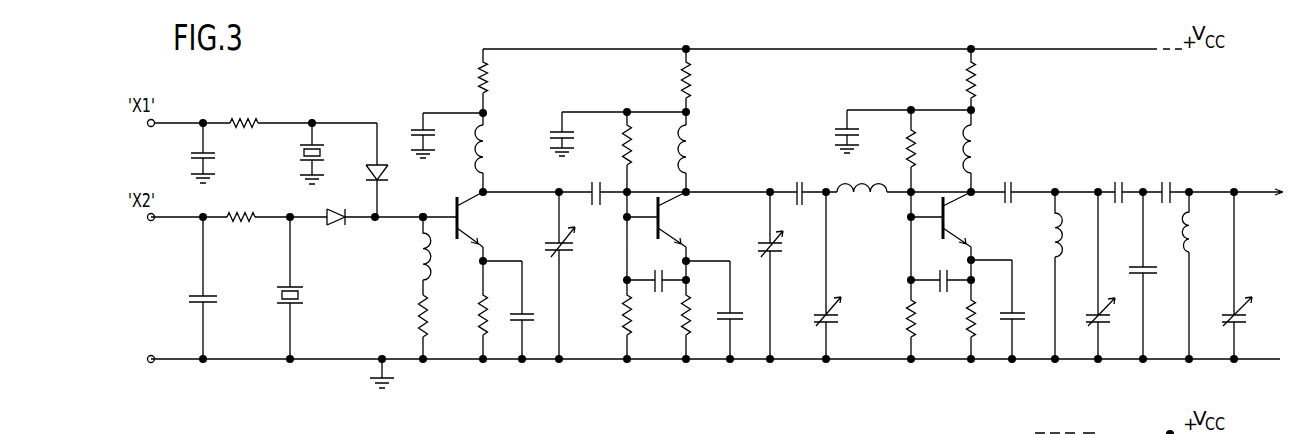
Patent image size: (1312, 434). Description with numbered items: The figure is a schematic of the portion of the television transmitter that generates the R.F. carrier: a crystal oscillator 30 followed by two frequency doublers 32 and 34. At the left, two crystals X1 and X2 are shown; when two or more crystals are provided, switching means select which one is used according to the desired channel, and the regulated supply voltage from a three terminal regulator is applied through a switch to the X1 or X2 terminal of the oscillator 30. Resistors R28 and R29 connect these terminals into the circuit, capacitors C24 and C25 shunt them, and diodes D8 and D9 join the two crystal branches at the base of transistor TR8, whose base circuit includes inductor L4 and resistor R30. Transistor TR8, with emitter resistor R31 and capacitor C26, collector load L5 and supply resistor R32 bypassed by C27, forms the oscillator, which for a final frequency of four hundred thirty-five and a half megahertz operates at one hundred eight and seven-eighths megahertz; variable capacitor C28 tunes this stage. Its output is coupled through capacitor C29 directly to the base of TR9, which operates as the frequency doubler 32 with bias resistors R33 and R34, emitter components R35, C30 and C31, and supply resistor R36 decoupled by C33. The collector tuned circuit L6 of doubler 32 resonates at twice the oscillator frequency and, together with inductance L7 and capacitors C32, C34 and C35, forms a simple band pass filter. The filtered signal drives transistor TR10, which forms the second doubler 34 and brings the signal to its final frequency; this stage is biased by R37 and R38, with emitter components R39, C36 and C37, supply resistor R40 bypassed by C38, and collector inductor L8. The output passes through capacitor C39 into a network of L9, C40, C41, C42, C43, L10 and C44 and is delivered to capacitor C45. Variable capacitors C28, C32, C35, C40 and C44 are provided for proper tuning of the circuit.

The crystal oscillator 30 is at (365, 312).
The frequency doubler 32 is at (800, 92).
The frequency doubler 34 is at (1072, 95).
The crystal X1 is at (298, 151).
The crystal X2 is at (302, 288).
The resistor R28 is at (241, 205).
The resistor R29 is at (266, 111).
The resistor R30 is at (407, 329).
The resistor R31 is at (469, 312).
The resistor R32 is at (501, 87).
The resistor R33 is at (610, 321).
The resistor R34 is at (643, 154).
The resistor R35 is at (669, 312).
The resistor R36 is at (704, 85).
The resistor R37 is at (894, 321).
The resistor R38 is at (927, 153).
The resistor R39 is at (955, 311).
The resistor R40 is at (986, 85).
The capacitor C24 is at (214, 288).
The capacitor C25 is at (219, 151).
The capacitor C26 is at (517, 312).
The capacitor C27 is at (439, 130).
The variable capacitor C28 is at (573, 275).
The capacitor C29 is at (599, 181).
The capacitor C30 is at (656, 268).
The capacitor C31 is at (722, 312).
The variable capacitor C32 is at (784, 275).
The capacitor C33 is at (606, 129).
The capacitor C34 is at (797, 181).
The variable capacitor C35 is at (817, 275).
The capacitor C36 is at (941, 268).
The capacitor C37 is at (1006, 311).
The capacitor C38 is at (892, 128).
The capacitor C39 is at (1022, 181).
The variable capacitor C40 is at (1110, 275).
The capacitor C41 is at (1115, 178).
The capacitor C42 is at (1152, 275).
The capacitor C43 is at (1166, 178).
The variable capacitor C44 is at (1246, 275).
The capacitor C45 is at (1277, 194).
The diode D8 is at (335, 231).
The diode D9 is at (388, 172).
The inductor L4 is at (412, 254).
The inductor L5 is at (494, 158).
The collector tuned circuit inductor L6 is at (698, 158).
The inductance L7 is at (862, 175).
The inductor L8 is at (980, 158).
The inductor L9 is at (1043, 275).
The inductor L10 is at (1204, 275).
The transistor TR8 is at (458, 226).
The transistor TR9 is at (660, 234).
The transistor TR10 is at (947, 234).